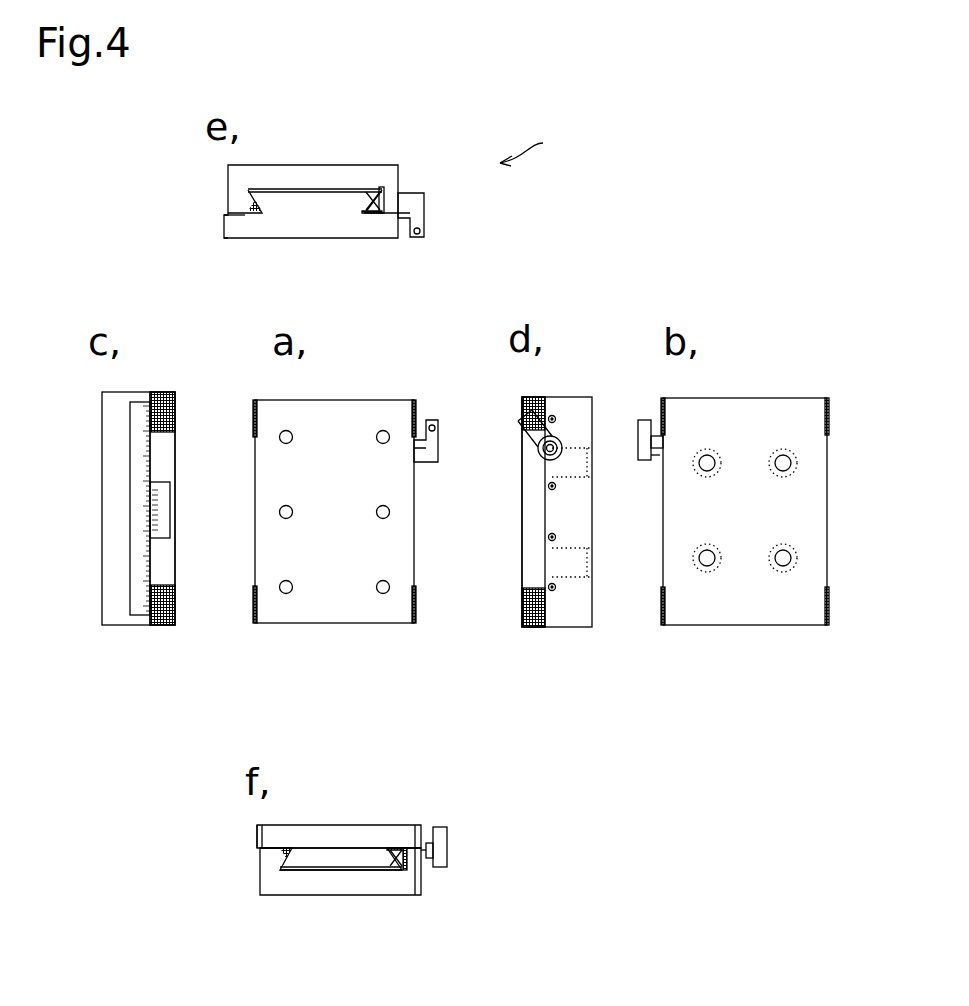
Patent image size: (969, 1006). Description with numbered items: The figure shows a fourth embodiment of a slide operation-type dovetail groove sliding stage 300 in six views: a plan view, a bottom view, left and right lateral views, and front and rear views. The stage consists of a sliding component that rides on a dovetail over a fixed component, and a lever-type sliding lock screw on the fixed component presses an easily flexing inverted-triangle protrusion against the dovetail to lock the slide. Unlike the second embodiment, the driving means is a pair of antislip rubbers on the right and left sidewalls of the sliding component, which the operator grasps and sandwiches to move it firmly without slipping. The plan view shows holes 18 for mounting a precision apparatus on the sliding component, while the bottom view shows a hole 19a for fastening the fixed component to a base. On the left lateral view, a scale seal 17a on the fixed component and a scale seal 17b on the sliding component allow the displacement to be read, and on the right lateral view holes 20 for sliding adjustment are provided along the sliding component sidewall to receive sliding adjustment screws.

The slide operation-type dovetail groove sliding stage 300 is at (602, 155).
The scale seal 17a is at (130, 500).
The scale seal 17b is at (170, 498).
The holes 18 is at (288, 593).
The hole 19a is at (710, 566).
The holes for sliding adjustment 20 is at (548, 486).